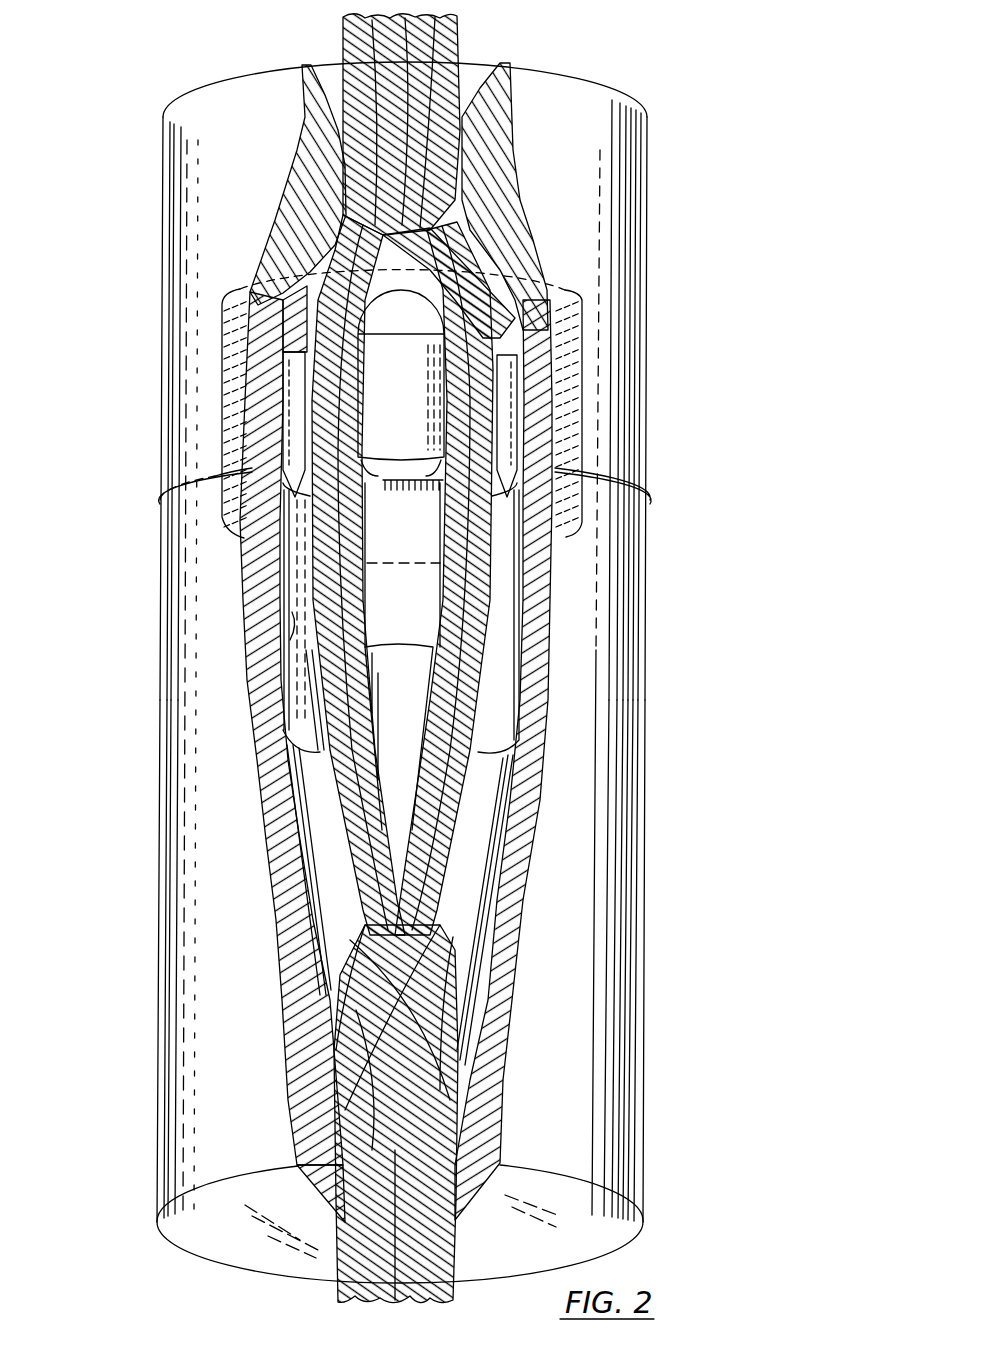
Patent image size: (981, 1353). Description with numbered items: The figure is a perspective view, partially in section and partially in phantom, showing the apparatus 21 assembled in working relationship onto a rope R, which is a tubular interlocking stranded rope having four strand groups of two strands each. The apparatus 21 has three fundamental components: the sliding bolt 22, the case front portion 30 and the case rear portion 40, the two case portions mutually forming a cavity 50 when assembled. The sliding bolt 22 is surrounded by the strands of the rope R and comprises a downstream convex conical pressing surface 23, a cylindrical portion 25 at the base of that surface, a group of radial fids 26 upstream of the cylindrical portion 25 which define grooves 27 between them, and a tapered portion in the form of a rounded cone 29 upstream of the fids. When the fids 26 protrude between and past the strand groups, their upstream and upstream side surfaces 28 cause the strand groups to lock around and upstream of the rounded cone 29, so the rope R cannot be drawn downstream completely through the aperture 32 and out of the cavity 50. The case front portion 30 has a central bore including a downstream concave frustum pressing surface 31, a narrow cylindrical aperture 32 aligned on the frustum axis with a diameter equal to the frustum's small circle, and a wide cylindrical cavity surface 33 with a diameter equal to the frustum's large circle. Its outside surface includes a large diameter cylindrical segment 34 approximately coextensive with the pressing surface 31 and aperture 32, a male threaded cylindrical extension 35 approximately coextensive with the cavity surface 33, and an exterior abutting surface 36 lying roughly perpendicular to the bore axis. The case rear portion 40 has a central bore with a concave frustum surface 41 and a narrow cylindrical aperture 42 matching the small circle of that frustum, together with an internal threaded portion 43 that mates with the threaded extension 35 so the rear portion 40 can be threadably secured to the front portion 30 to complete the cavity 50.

The rope R is at (353, 40).
The apparatus 21 is at (475, 46).
The sliding bolt 22 is at (500, 668).
The downstream convex conical pressing surface 23 is at (427, 940).
The cylindrical portion 25 is at (440, 592).
The fids 26 is at (290, 432).
The grooves 27 is at (455, 397).
The upstream and upstream side surfaces 28 is at (403, 303).
The rounded cone 29 is at (428, 262).
The case front portion 30 is at (155, 1124).
The downstream concave frustum pressing surface 31 is at (287, 1003).
The narrow cylindrical aperture 32 is at (317, 1190).
The wide cylindrical cavity surface 33 is at (293, 725).
The large diameter cylindrical segment 34 is at (172, 840).
The male threaded cylindrical extension 35 is at (245, 462).
The exterior abutting surface 36 is at (213, 1247).
The case rear portion 40 is at (150, 296).
The concave frustum surface 41 is at (284, 200).
The narrow cylindrical aperture 42 is at (332, 173).
The internal threaded portion 43 is at (222, 348).
The cavity 50 is at (297, 660).